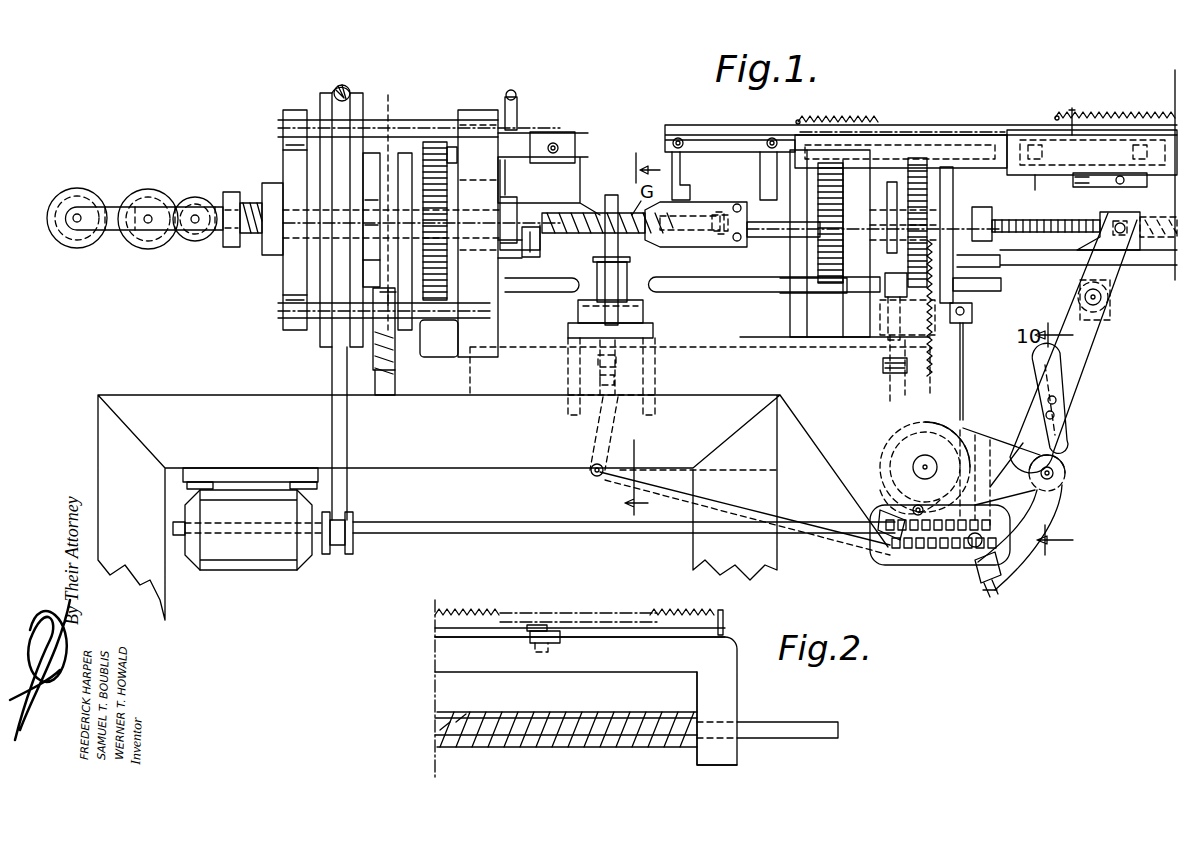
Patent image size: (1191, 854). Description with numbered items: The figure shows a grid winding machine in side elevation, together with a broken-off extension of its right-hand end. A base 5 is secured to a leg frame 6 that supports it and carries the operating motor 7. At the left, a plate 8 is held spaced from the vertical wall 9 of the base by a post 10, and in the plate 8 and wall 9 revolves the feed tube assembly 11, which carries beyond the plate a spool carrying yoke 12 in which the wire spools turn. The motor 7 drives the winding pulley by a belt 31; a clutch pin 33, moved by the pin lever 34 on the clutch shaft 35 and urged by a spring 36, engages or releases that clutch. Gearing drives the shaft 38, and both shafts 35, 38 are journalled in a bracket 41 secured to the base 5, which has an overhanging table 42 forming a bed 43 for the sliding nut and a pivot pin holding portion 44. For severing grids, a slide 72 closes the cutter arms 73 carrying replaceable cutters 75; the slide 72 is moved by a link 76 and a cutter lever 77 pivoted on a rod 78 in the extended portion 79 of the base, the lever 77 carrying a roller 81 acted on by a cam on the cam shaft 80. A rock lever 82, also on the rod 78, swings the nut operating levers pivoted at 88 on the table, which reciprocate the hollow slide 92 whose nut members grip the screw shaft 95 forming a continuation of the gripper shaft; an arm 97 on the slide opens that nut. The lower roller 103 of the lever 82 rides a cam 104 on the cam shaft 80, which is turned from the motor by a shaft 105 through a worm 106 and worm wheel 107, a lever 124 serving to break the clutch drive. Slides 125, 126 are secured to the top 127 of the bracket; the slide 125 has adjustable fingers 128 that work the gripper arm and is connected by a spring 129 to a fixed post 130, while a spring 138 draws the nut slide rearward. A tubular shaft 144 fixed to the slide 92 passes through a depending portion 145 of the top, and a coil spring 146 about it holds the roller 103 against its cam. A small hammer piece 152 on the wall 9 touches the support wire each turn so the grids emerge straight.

In FIG. 1, the base 5 is at (695, 360).
In FIG. 1, the leg frame 6 is at (428, 462).
In FIG. 1, the operating motor 7 is at (274, 582).
In FIG. 1, the plate 8 is at (290, 165).
In FIG. 1, the vertical wall 9 is at (480, 115).
In FIG. 1, the post 10 is at (409, 132).
In FIG. 1, the feed tube assembly 11 is at (357, 211).
In FIG. 1, the spool carrying frame or yoke 12 is at (990, 290).
In FIG. 1, the belt 31 is at (333, 373).
In FIG. 1, the pin 33 is at (383, 297).
In FIG. 1, the pin lever 34 is at (400, 328).
In FIG. 1, the clutch shaft 35 is at (567, 270).
In FIG. 1, the spring 36 is at (382, 372).
In FIG. 1, the shaft 38 is at (787, 237).
In FIG. 1, the bracket 41 is at (855, 322).
In FIG. 1, the overhanging table 42 is at (1040, 292).
In FIG. 1, the bed 43 is at (1108, 266).
In FIG. 1, the pivot pin holding portion 44 is at (1097, 306).
In FIG. 1, the slide 72 is at (648, 406).
In FIG. 1, the cutter arms 73 is at (607, 290).
In FIG. 1, the replaceable cutters 75 is at (613, 205).
In FIG. 1, the link 76 is at (595, 445).
In FIG. 1, the cutter lever 77 is at (677, 487).
In FIG. 1, the rod 78 is at (1055, 472).
In FIG. 1, the extended portion 79 is at (965, 440).
In FIG. 1, the cam shaft 80 is at (915, 460).
In FIG. 1, the roller 81 is at (893, 490).
In FIG. 1, the rock lever 82 is at (893, 462).
In FIG. 1, the pivot 88 is at (1083, 352).
In FIG. 1, the slide 92 is at (1142, 250).
In FIG. 1, the screw shaft 95 is at (1020, 209).
In FIG. 1, the arm 97 is at (1100, 187).
In FIG. 1, the adjustable roller 103 is at (972, 570).
In FIG. 1, the cam 104 is at (878, 512).
In FIG. 1, the shaft 105 is at (550, 537).
In FIG. 1, the worm 106 is at (898, 548).
In FIG. 1, the worm wheel 107 is at (940, 420).
In FIG. 1, the lever 124 is at (1014, 434).
In FIG. 1, the slide 125 is at (742, 120).
In FIG. 1, the slide 126 is at (1013, 132).
In FIG. 2, the slide 126 is at (510, 640).
In FIG. 1, the top 127 is at (963, 165).
In FIG. 2, the top 127 is at (490, 663).
In FIG. 1, the adjustable fingers 128 is at (676, 170).
In FIG. 1, the spring 129 is at (852, 120).
In FIG. 1, the fixed post 130 is at (1058, 116).
In FIG. 1, the spring 138 is at (508, 235).
In FIG. 2, the spring 138 is at (655, 616).
In FIG. 2, the tubular shaft 144 is at (612, 680).
In FIG. 2, the depending portion 145 is at (728, 702).
In FIG. 2, the coil spring 146 is at (553, 746).
In FIG. 1, the hammer piece 152 is at (532, 258).